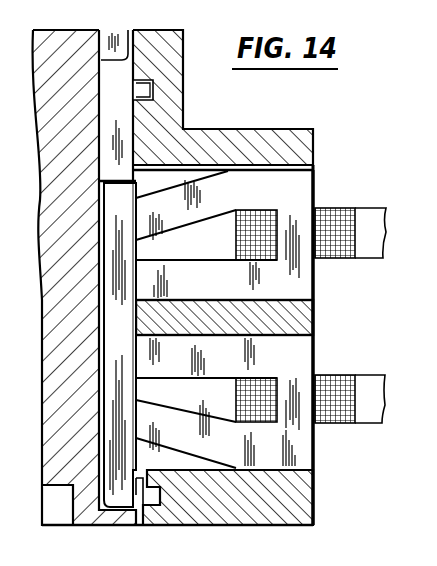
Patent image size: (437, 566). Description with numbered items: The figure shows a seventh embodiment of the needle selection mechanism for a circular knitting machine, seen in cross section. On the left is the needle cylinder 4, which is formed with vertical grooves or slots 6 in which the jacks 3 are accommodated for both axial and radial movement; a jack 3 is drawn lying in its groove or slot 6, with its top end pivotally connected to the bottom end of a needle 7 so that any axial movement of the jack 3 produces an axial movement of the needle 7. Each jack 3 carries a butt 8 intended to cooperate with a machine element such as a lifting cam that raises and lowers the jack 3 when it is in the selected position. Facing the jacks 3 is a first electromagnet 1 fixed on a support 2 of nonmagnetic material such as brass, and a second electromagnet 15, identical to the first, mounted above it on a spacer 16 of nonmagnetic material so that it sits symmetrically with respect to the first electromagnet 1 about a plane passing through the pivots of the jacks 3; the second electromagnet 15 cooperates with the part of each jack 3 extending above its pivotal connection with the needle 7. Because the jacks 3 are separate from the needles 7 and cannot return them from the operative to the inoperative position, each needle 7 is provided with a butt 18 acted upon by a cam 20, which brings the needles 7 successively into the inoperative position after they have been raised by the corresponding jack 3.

The electromagnet 1 is at (316, 447).
The support 2 is at (313, 497).
The jack 3 is at (113, 414).
The needle cylinder 4 is at (45, 208).
The groove or slot 6 is at (113, 62).
The needle 7 is at (110, 140).
The butt 8 is at (139, 495).
The second electromagnet 15 is at (316, 182).
The spacer 16 is at (316, 312).
The butt 18 is at (153, 91).
The cam 20 is at (243, 133).